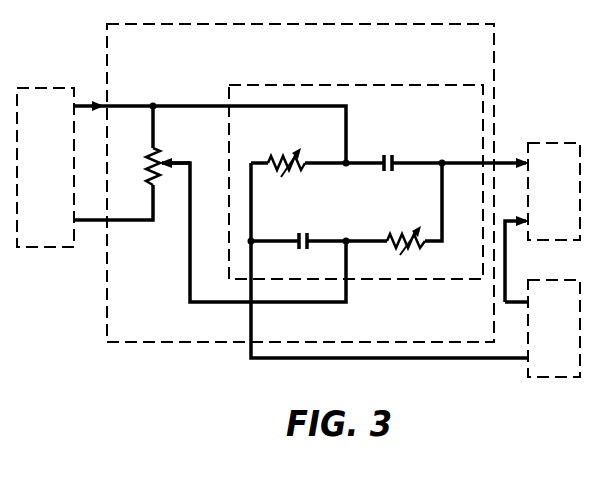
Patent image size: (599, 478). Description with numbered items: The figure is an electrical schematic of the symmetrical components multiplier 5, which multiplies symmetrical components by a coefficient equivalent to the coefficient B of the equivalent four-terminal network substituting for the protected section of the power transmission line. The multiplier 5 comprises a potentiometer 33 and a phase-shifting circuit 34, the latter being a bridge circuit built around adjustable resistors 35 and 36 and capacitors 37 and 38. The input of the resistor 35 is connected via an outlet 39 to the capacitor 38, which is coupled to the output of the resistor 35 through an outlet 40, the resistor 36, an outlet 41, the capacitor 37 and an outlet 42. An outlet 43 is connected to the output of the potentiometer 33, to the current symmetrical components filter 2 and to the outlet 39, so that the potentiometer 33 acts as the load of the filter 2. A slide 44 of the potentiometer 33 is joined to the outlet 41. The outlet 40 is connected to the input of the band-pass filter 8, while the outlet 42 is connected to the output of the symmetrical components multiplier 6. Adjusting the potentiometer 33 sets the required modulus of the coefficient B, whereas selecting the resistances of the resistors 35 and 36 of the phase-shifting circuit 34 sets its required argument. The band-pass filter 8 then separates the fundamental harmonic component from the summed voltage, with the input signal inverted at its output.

The current symmetrical components filter 2 is at (41, 84).
The symmetrical components multiplier 5 is at (500, 70).
The symmetrical components multiplier 6 is at (556, 275).
The band-pass filter 8 is at (554, 138).
The potentiometer 33 is at (150, 170).
The phase-shifting circuit 34 is at (364, 80).
The adjustable resistor 35 is at (286, 160).
The adjustable resistor 36 is at (400, 236).
The capacitor 37 is at (302, 233).
The capacitor 38 is at (385, 155).
The outlet 39 is at (347, 162).
The outlet 40 is at (442, 162).
The outlet 41 is at (346, 240).
The outlet 42 is at (252, 240).
The outlet 43 is at (155, 104).
The slide 44 is at (168, 160).